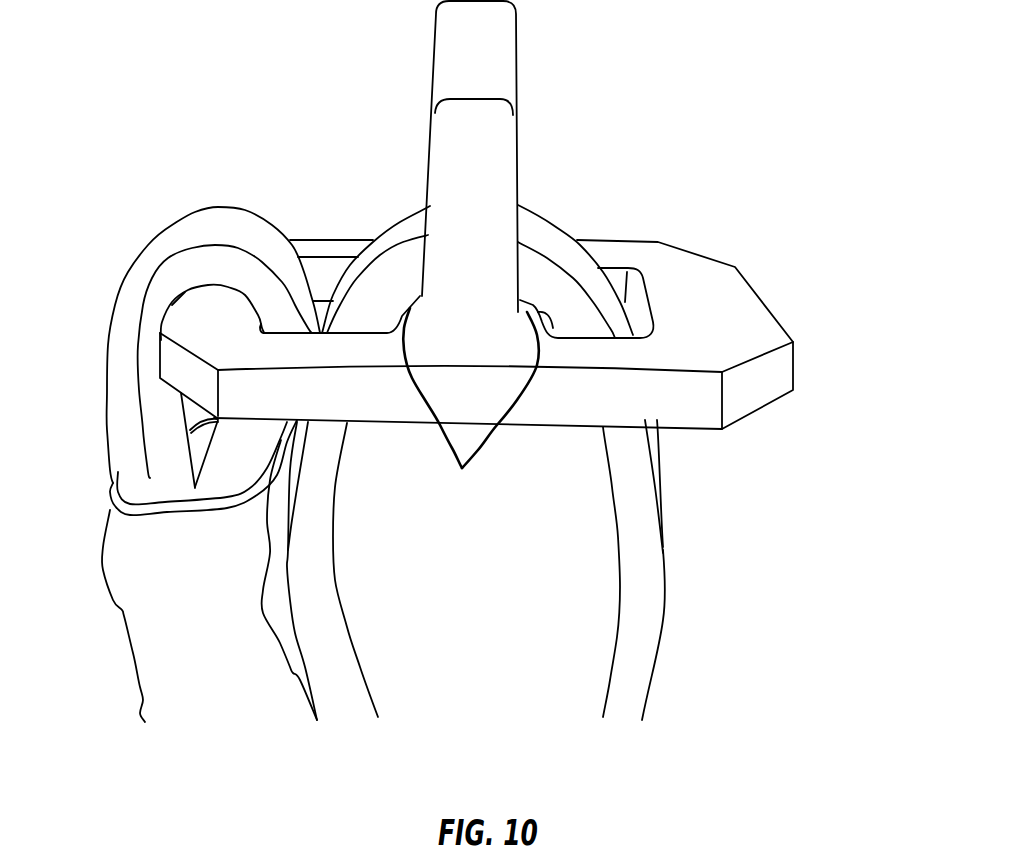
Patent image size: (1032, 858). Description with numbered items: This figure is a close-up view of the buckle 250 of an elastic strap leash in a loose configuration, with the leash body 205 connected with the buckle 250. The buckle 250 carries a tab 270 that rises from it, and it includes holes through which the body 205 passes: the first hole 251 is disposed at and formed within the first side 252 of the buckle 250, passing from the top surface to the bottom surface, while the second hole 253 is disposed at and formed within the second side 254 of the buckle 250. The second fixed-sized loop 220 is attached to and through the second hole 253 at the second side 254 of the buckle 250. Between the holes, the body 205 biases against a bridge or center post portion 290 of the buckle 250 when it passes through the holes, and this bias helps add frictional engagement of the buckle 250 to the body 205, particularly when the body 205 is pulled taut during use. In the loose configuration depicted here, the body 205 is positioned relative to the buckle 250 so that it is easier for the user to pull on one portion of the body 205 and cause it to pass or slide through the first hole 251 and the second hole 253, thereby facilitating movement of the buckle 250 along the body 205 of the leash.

The leash body 205 is at (650, 607).
The second fixed-sized loop 220 is at (147, 207).
The buckle 250 is at (487, 389).
The first hole 251 is at (633, 250).
The first side 252 is at (812, 323).
The second hole 253 is at (329, 237).
The second side 254 is at (192, 336).
The tab 270 is at (506, 147).
The bridge or center post portion 290 is at (471, 406).